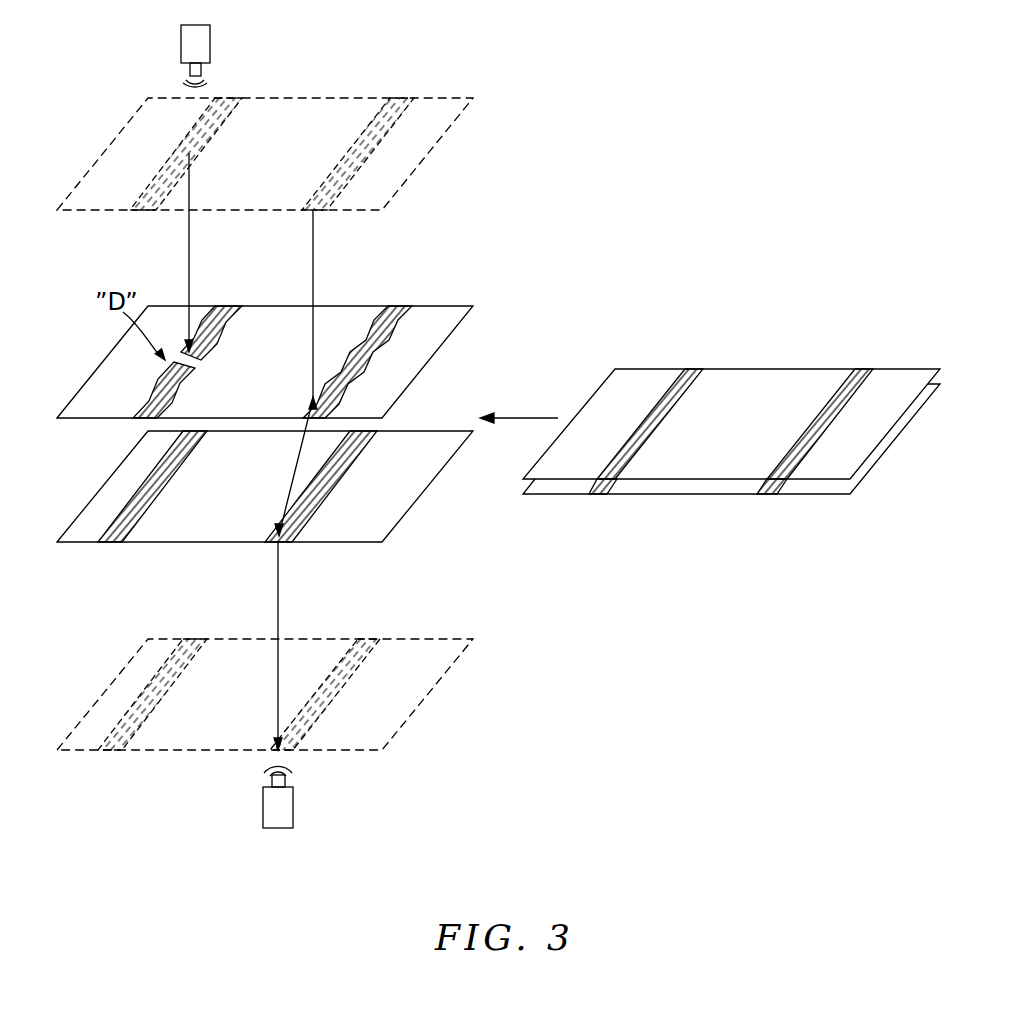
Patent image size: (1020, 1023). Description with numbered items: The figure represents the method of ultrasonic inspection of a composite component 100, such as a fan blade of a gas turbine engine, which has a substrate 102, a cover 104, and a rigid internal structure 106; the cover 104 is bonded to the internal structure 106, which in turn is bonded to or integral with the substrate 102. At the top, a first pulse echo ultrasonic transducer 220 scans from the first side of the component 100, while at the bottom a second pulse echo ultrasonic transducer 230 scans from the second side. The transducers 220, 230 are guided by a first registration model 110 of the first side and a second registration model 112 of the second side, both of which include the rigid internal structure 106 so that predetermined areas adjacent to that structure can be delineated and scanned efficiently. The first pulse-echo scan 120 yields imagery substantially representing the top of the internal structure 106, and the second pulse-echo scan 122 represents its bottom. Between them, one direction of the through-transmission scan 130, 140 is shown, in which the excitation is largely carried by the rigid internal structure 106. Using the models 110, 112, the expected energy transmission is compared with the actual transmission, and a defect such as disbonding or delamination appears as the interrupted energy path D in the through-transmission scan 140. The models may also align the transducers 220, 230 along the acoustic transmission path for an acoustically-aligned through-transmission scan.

The component 100 is at (731, 441).
The substrate 102 is at (622, 378).
The cover 104 is at (717, 496).
The rigid internal structure 106 is at (697, 370).
The first registration model 110 is at (428, 152).
The second registration model 112 is at (427, 690).
The first pulse-echo scan 120 is at (455, 306).
The second pulse-echo scan 122 is at (392, 530).
The through-transmission scan 130 is at (293, 482).
The through-transmission scan 140 is at (189, 260).
The first pulse echo ultrasonic transducer 220 is at (203, 36).
The second pulse echo ultrasonic transducer 230 is at (287, 805).